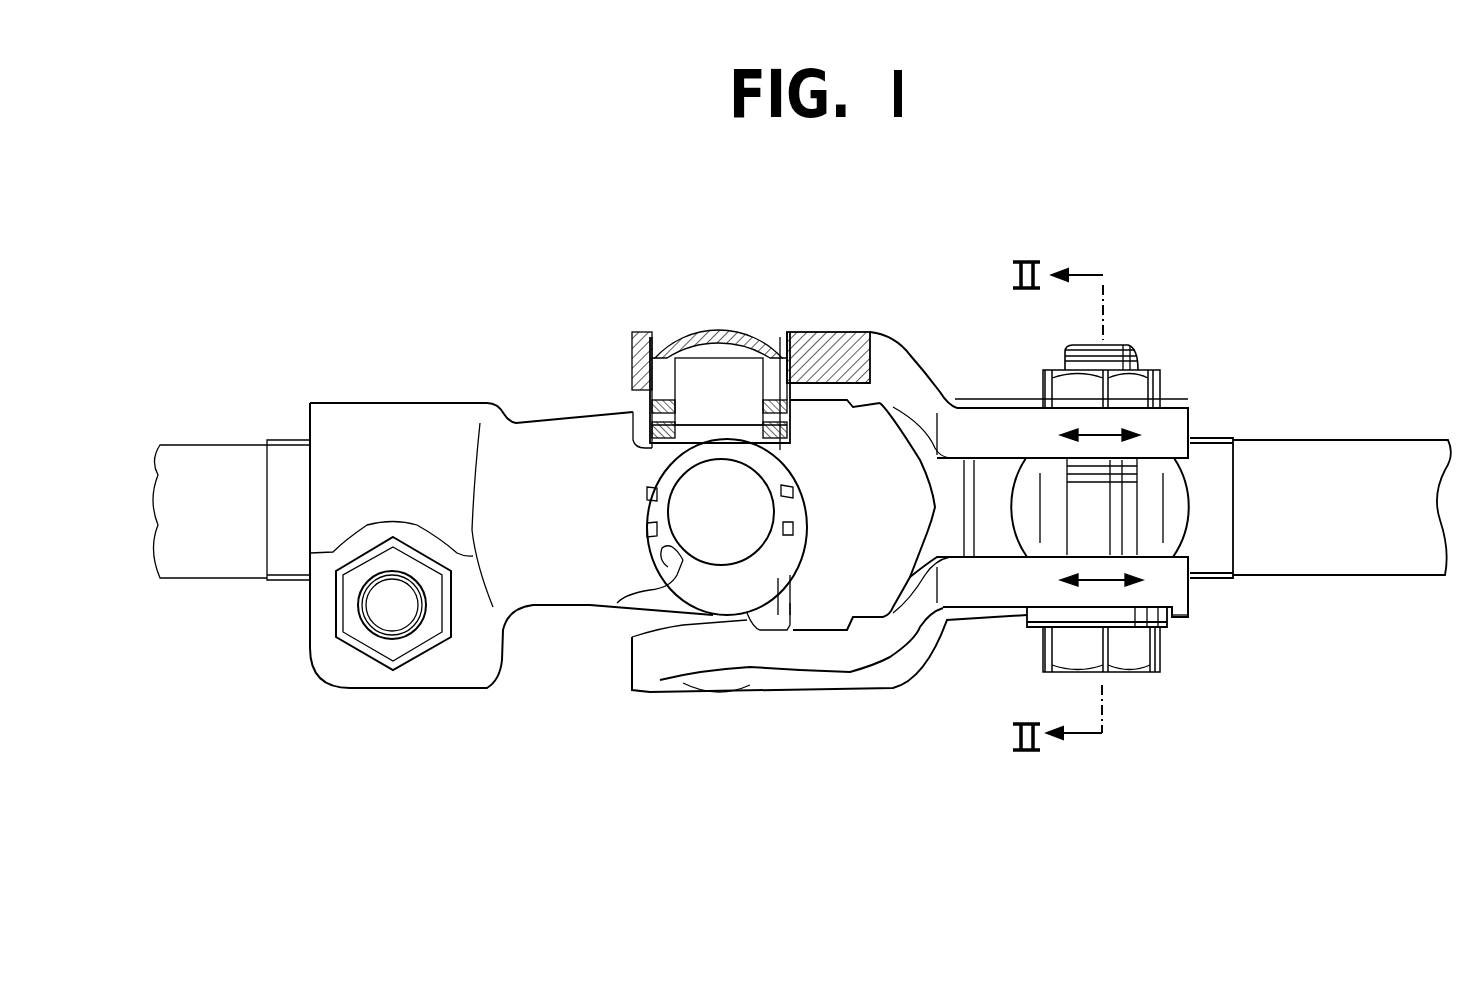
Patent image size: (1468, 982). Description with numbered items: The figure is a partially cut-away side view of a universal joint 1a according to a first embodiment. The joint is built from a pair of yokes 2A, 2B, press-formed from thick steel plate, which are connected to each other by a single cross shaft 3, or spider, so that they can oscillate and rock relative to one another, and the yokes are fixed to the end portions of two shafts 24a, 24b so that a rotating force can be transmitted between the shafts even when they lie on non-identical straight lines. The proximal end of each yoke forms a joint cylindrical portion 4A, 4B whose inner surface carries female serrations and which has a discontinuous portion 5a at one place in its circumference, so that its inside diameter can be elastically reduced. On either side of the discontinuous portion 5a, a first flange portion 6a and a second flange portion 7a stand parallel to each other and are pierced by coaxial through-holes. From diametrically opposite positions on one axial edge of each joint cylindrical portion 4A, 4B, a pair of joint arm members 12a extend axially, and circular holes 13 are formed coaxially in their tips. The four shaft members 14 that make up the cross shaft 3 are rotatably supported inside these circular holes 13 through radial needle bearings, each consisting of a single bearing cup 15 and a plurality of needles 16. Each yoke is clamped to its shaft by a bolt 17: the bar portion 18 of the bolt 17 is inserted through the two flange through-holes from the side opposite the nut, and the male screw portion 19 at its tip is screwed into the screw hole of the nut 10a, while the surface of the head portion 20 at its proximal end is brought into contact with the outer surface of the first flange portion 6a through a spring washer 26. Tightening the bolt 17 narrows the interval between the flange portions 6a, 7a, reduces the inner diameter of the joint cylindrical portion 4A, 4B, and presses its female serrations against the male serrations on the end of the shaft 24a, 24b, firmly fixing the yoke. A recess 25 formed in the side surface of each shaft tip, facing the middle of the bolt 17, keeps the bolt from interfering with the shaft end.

The universal joint 1a is at (852, 310).
The yoke 2A is at (886, 320).
The yoke 2B is at (561, 397).
The cross shaft 3 is at (720, 350).
The joint cylindrical portion 4A is at (1000, 406).
The joint cylindrical portion 4B is at (423, 432).
The discontinuous portion 5a is at (1000, 548).
The first flange portion 6a is at (1167, 630).
The second flange portion 7a is at (460, 660).
The nut 10a is at (363, 637).
The joint arm member 12a is at (812, 345).
The circular hole 13 is at (670, 347).
The shaft member 14 is at (750, 360).
The bearing cup 15 is at (683, 358).
The needle 16 is at (660, 400).
The bolt 17 is at (392, 614).
The bar portion 18 is at (1122, 515).
The male screw portion 19 is at (1140, 365).
The head portion 20 is at (1152, 655).
The shaft 24a is at (1330, 545).
The shaft 24b is at (216, 476).
The recess 25 is at (1055, 527).
The spring washer 26 is at (1160, 650).